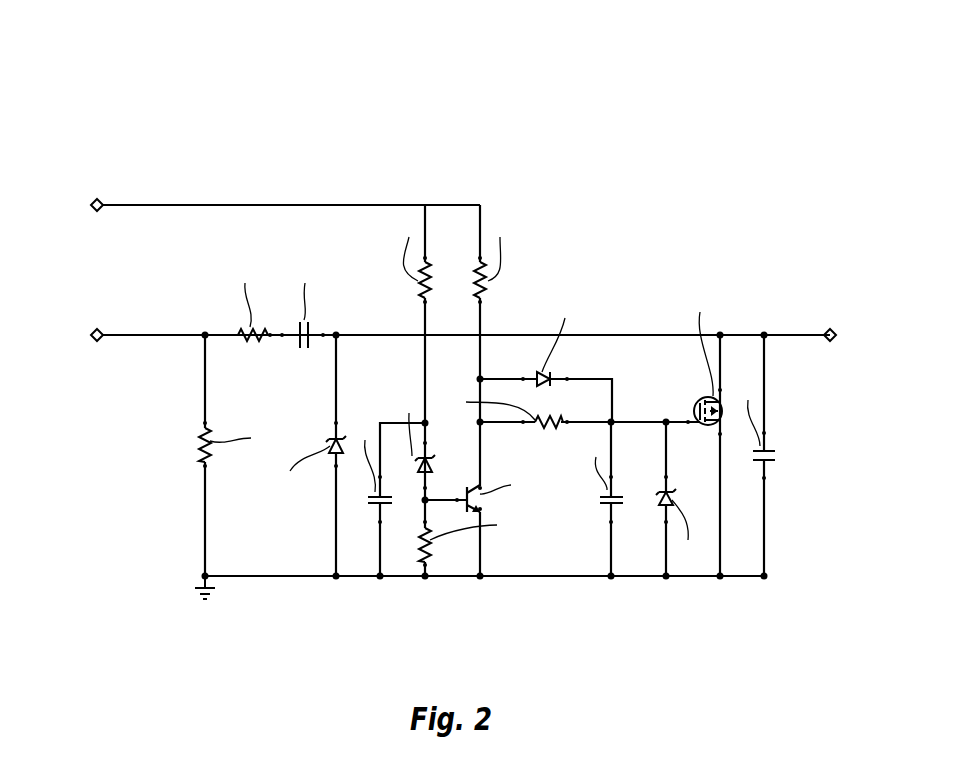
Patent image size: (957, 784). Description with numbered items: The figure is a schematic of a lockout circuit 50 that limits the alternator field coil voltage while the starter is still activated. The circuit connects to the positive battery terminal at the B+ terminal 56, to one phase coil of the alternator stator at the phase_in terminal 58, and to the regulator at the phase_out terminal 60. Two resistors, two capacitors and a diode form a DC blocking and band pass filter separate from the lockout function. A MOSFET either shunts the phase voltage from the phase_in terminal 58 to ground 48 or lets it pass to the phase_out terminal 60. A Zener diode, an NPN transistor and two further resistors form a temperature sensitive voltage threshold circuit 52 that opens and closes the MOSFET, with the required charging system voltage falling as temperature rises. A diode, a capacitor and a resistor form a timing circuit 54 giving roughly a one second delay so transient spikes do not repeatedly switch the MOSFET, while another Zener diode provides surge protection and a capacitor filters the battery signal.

The ground 48 is at (210, 601).
The lockout circuit 50 is at (370, 104).
The temperature sensitive voltage threshold circuit 52 is at (407, 561).
The timing circuit 54 is at (647, 561).
The B+ terminal 56 is at (97, 198).
The phase_in terminal 58 is at (98, 342).
The phase_out terminal 60 is at (830, 328).